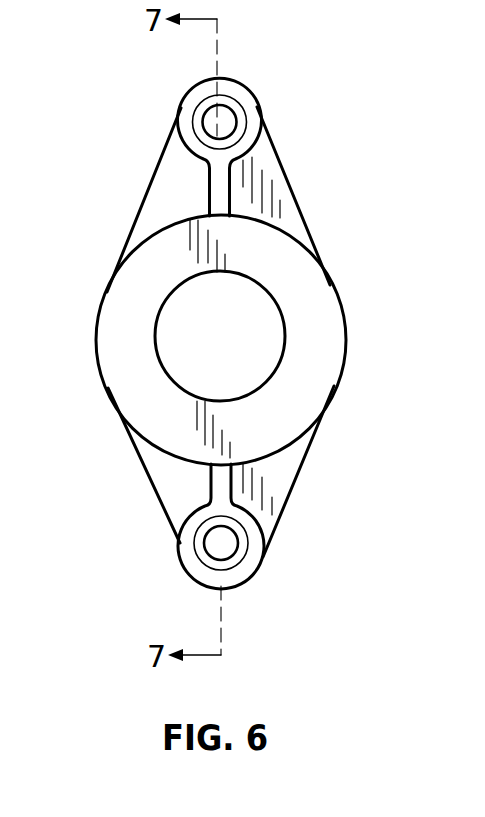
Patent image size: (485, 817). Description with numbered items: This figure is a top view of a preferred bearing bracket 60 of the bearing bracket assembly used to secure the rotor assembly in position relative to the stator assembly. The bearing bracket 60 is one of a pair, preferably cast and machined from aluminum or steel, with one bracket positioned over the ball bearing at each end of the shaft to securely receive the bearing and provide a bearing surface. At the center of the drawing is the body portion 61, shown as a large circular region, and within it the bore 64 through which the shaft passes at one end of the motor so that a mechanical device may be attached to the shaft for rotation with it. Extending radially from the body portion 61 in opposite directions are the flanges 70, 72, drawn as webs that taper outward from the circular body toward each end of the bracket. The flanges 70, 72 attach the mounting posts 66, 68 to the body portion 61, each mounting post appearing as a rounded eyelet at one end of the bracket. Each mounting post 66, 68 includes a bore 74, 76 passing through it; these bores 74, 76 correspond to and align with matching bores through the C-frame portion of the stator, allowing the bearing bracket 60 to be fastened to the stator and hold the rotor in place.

The bearing bracket 60 is at (356, 266).
The body portion 61 is at (310, 431).
The bore 64 is at (157, 358).
The mounting post 66 is at (250, 93).
The mounting post 68 is at (267, 557).
The flange 70 is at (287, 170).
The flange 72 is at (290, 490).
The bore 74 is at (208, 118).
The bore 76 is at (210, 543).